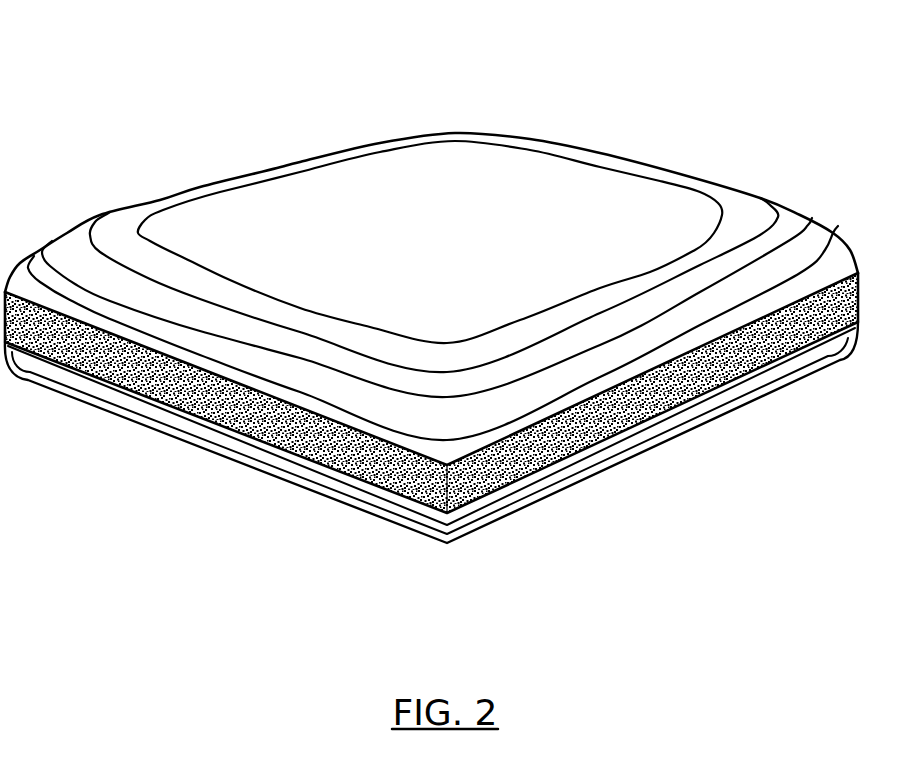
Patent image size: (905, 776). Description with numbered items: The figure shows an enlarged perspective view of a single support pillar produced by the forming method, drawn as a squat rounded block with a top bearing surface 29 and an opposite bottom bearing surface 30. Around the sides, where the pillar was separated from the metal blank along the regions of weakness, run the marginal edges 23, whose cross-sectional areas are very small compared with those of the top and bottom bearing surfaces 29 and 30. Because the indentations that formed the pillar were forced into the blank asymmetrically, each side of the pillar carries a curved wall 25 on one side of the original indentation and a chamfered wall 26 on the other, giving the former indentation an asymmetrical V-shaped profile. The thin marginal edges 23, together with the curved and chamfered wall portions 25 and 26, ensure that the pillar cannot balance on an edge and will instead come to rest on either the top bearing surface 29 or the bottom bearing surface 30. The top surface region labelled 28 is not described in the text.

The top panel 28 is at (392, 119).
The chamfered wall 26 is at (277, 170).
The curved wall 25 is at (615, 157).
The top bearing surface 29 is at (640, 207).
The marginal edges 23 is at (282, 430).
The bottom bearing surface 30 is at (113, 423).